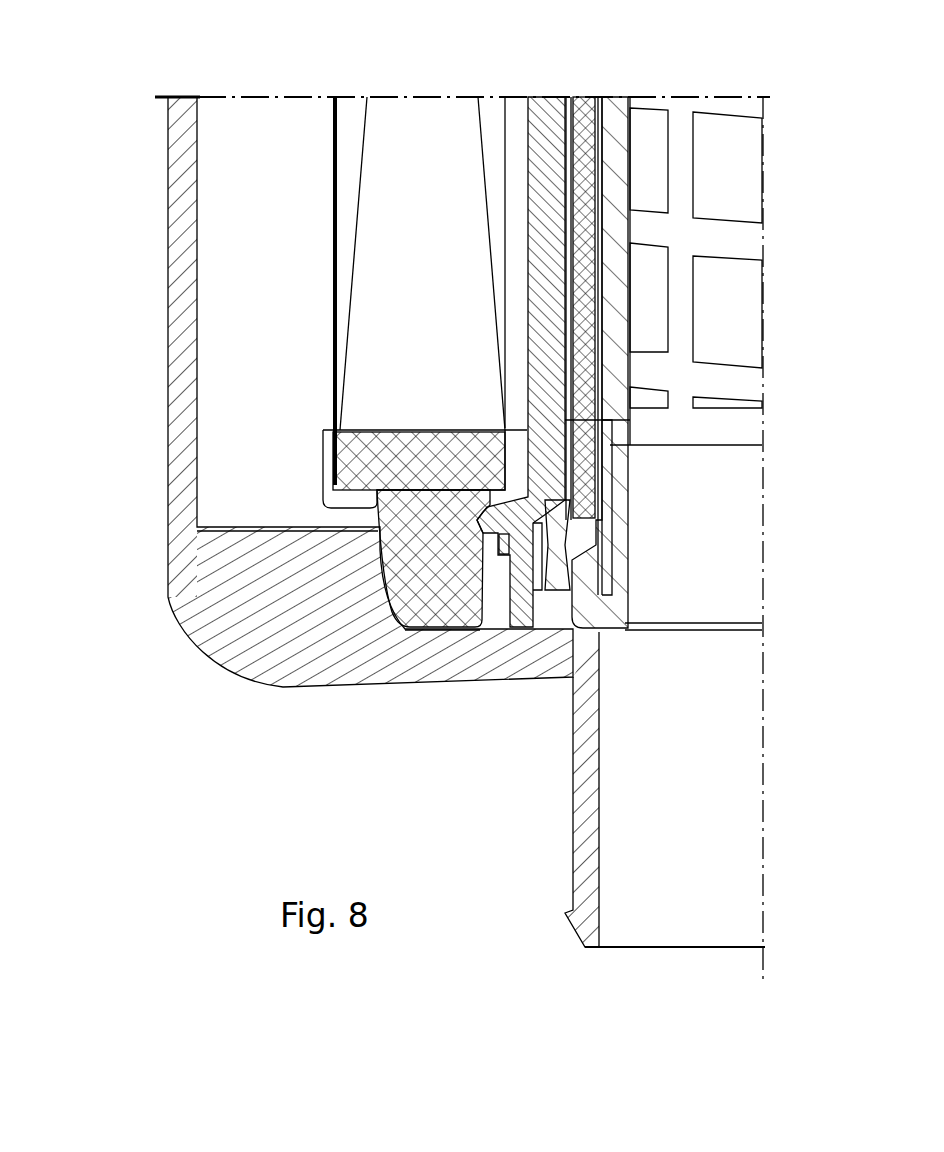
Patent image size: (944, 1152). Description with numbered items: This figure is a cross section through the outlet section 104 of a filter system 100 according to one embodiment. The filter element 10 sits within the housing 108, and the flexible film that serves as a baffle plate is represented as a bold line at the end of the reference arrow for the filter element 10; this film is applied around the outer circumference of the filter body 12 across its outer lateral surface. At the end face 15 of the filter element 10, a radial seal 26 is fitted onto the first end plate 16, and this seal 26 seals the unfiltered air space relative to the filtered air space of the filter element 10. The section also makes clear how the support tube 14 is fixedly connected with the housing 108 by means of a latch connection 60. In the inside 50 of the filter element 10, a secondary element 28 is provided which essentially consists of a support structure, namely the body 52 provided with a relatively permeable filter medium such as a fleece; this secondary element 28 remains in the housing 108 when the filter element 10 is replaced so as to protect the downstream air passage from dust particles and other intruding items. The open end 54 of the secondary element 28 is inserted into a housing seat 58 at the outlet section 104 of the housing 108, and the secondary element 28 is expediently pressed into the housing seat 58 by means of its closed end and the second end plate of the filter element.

The filter assembly 100 is at (785, 137).
The housing 108 is at (178, 350).
The filter element 10 is at (333, 233).
The filter body 12 is at (376, 168).
The support tube 14 is at (548, 320).
The secondary element 28 is at (570, 213).
The body 52 is at (630, 270).
The open end 54 is at (602, 630).
The housing seat 58 is at (580, 607).
The inside 50 is at (740, 317).
The first end plate 16 is at (325, 470).
The radial seal 26 is at (405, 628).
The end face 15 is at (438, 632).
The latch connection 60 is at (503, 560).
The outlet section 104 is at (585, 843).